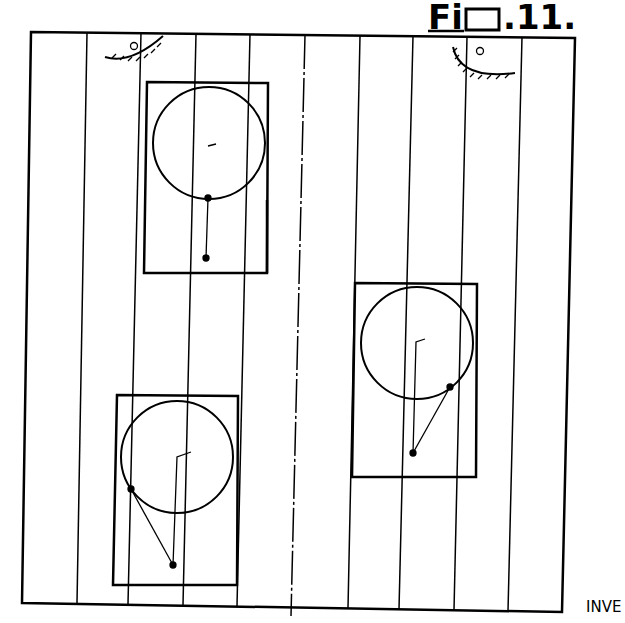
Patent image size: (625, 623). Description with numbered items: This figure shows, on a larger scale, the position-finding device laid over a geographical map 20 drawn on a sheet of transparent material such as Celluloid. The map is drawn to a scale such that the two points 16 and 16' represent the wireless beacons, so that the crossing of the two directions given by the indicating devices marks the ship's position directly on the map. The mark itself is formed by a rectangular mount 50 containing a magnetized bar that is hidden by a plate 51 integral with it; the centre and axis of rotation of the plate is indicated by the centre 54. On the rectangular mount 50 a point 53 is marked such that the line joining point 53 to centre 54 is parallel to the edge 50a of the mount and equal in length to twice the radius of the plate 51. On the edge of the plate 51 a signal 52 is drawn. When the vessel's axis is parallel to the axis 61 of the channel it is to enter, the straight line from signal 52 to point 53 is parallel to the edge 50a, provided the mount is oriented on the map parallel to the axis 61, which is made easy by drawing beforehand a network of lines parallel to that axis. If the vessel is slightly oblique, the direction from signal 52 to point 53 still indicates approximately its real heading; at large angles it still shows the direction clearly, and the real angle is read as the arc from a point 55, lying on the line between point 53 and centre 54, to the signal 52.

The geographical map 20 is at (66, 42).
The point representing wireless beacon 16 is at (129, 48).
The point representing wireless beacon 16' is at (488, 60).
The axis of the channel 61 is at (310, 55).
The rectangular mount 50 is at (262, 103).
The edge of the mount 50a is at (270, 248).
The plate 51 is at (170, 124).
The signal 52 is at (211, 196).
The point on the mount 53 is at (210, 258).
The centre of the plate 54 is at (311, 347).
The point on line 53-54 55 is at (206, 203).